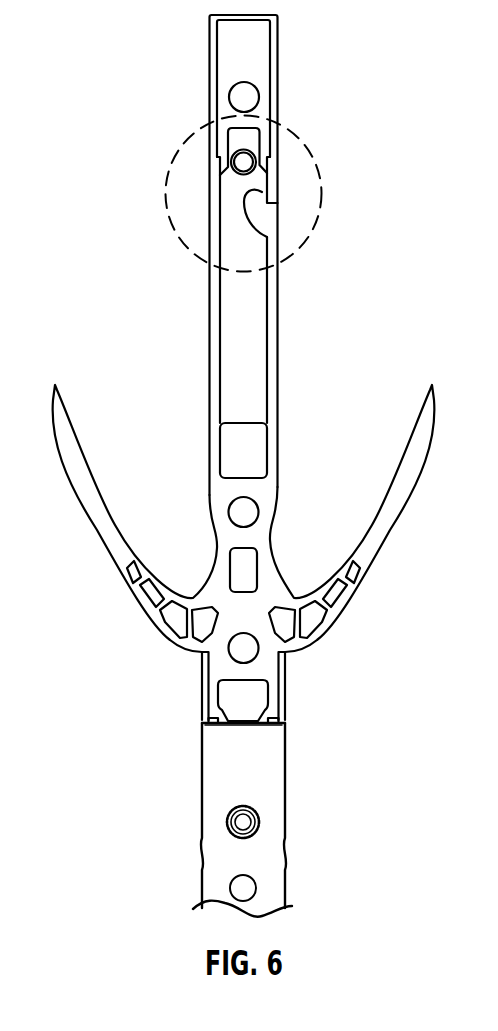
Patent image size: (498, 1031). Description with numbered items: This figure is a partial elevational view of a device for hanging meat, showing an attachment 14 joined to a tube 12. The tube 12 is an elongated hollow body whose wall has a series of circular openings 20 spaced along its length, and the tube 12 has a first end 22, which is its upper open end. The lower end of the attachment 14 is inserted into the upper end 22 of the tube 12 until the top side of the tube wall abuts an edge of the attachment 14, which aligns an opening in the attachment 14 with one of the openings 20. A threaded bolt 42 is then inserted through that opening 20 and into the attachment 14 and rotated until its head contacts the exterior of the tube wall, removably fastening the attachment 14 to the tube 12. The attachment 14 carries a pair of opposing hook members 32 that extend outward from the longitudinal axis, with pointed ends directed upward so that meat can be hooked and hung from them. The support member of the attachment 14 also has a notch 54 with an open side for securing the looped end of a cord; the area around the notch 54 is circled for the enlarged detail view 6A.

The attachment 14 is at (218, 297).
The notch 54 is at (259, 208).
The detail view circle 6A is at (296, 148).
The hook members 32 is at (97, 507).
The tube 12 is at (223, 785).
The first end 22 is at (293, 748).
The threaded bolt 42 is at (261, 821).
The openings 20 is at (255, 890).